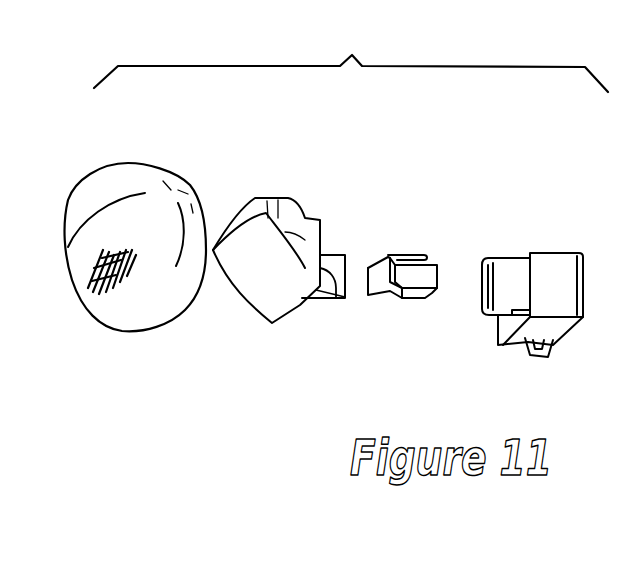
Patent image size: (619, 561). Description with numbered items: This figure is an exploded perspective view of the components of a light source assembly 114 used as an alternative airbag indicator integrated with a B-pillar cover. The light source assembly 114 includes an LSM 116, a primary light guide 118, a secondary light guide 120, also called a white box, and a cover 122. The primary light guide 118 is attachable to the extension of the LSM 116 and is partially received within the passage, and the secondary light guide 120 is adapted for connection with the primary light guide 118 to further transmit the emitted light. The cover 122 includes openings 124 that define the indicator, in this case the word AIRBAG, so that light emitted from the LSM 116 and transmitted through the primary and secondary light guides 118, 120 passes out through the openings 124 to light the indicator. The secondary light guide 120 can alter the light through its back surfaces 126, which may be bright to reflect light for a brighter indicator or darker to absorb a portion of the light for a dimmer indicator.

The light source assembly 114 is at (351, 56).
The LSM 116 is at (552, 253).
The primary light guide 118 is at (407, 250).
The secondary light guide 120 is at (255, 198).
The cover 122 is at (128, 163).
The openings 124 is at (100, 298).
The back surfaces 126 is at (335, 299).